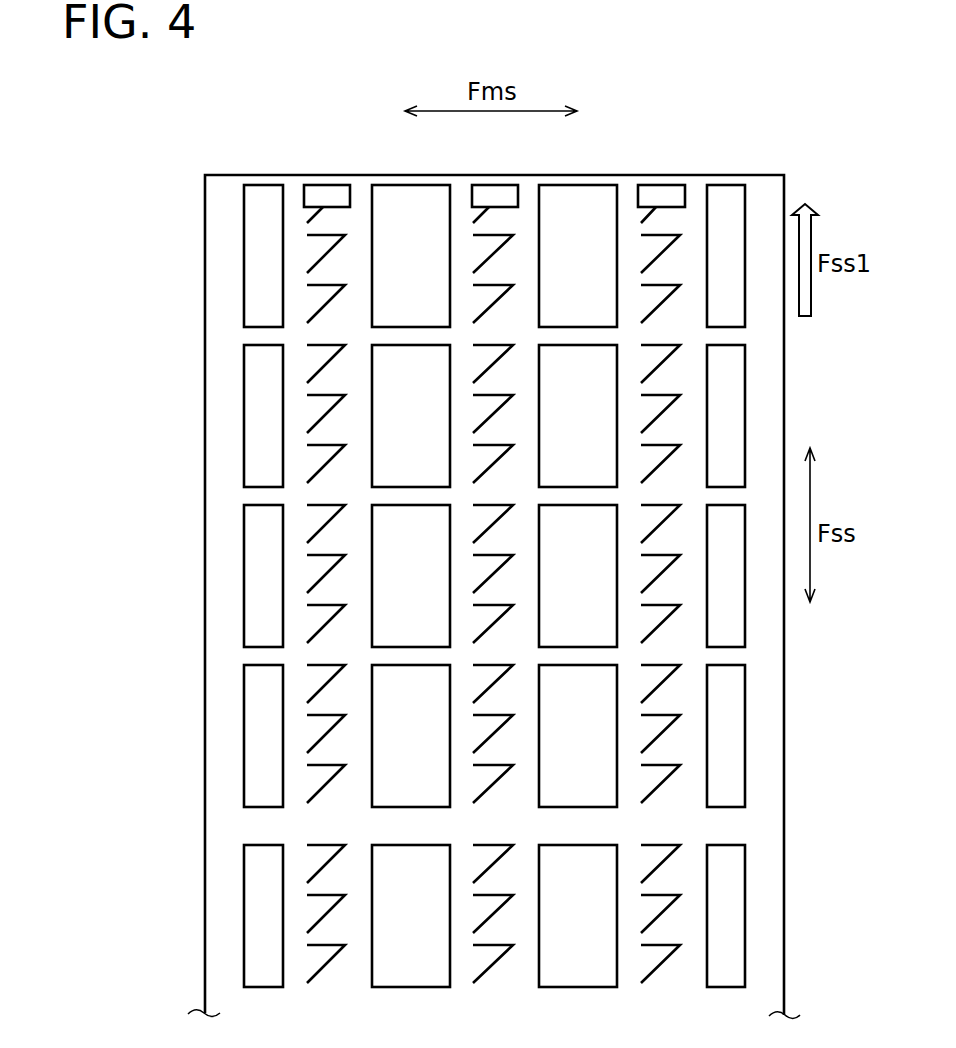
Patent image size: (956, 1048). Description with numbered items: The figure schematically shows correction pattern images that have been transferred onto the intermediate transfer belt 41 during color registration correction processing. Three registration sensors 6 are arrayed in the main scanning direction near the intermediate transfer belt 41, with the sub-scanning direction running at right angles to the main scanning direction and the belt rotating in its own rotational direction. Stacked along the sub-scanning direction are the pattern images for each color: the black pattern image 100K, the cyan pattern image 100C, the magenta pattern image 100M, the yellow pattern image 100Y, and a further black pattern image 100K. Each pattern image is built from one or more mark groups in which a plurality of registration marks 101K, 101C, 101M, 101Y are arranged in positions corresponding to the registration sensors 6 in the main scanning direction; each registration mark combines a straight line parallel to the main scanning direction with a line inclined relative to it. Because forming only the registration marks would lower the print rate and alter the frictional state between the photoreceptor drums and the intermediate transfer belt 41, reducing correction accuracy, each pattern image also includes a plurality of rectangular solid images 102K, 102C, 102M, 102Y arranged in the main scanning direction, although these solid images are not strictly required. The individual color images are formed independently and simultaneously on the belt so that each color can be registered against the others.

The registration sensor 6 is at (326, 197).
The intermediate transfer belt 41 is at (783, 376).
The correction pattern image (black) 100K is at (124, 175).
The registration mark (black) 101K is at (320, 257).
The rectangular solid image (black) 102K is at (398, 296).
The correction pattern image (cyan) 100C is at (124, 335).
The registration mark (cyan) 101C is at (320, 417).
The rectangular solid image (cyan) 102C is at (398, 456).
The correction pattern image (magenta) 100M is at (124, 495).
The registration mark (magenta) 101M is at (320, 577).
The rectangular solid image (magenta) 102M is at (398, 616).
The correction pattern image (yellow) 100Y is at (124, 655).
The registration mark (yellow) 101Y is at (320, 737).
The rectangular solid image (yellow) 102Y is at (398, 776).